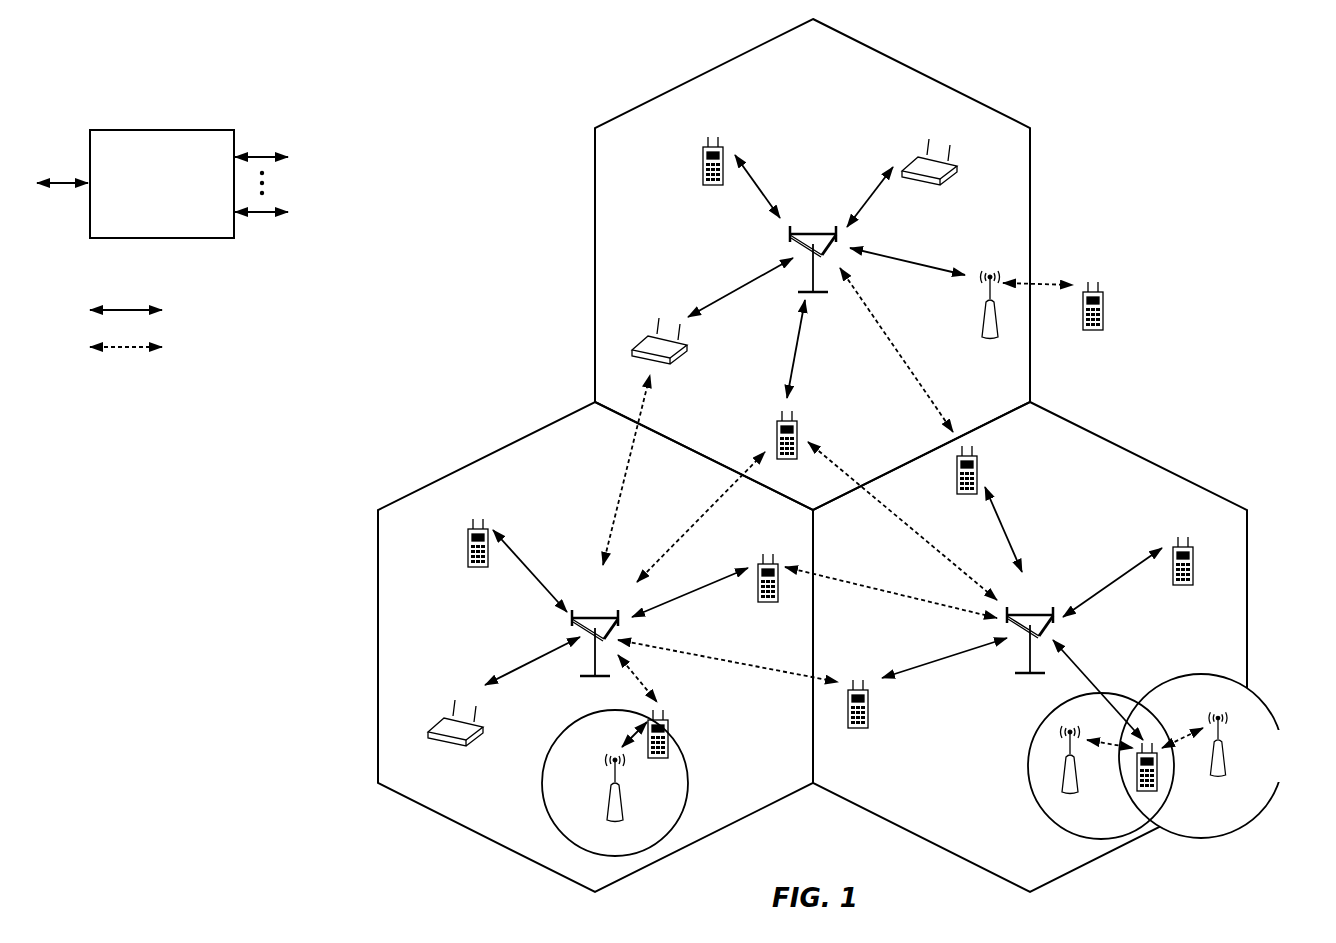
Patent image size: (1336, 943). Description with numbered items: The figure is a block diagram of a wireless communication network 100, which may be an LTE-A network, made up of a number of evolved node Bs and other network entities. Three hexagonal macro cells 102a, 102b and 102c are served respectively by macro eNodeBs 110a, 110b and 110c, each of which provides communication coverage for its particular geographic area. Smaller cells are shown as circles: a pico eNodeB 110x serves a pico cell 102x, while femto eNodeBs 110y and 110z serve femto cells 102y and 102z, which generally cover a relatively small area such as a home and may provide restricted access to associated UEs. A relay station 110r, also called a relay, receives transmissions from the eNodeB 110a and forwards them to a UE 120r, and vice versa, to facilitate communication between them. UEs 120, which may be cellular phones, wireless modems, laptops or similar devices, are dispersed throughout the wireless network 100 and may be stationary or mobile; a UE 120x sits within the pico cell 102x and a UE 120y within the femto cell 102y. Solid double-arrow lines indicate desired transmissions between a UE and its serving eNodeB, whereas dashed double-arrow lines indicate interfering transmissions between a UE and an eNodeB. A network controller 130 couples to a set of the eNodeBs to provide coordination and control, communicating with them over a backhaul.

The wireless communication network 100 is at (1180, 88).
The macro cell 102a is at (935, 56).
The macro cell 102b is at (491, 454).
The macro cell 102c is at (1138, 455).
The pico cell 102x is at (560, 731).
The femto cell 102y is at (1037, 729).
The femto cell 102z is at (1195, 675).
The macro eNodeB 110a is at (808, 232).
The macro eNodeB 110b is at (590, 616).
The macro eNodeB 110c is at (1026, 614).
The relay station 110r is at (978, 318).
The pico eNodeB 110x is at (622, 815).
The femto eNodeB 110y is at (1080, 785).
The femto eNodeB 110z is at (1228, 776).
The UE 120 is at (703, 152).
The UE 120r is at (1103, 322).
The UE 120x is at (669, 728).
The UE 120y is at (1138, 788).
The network controller 130 is at (156, 130).